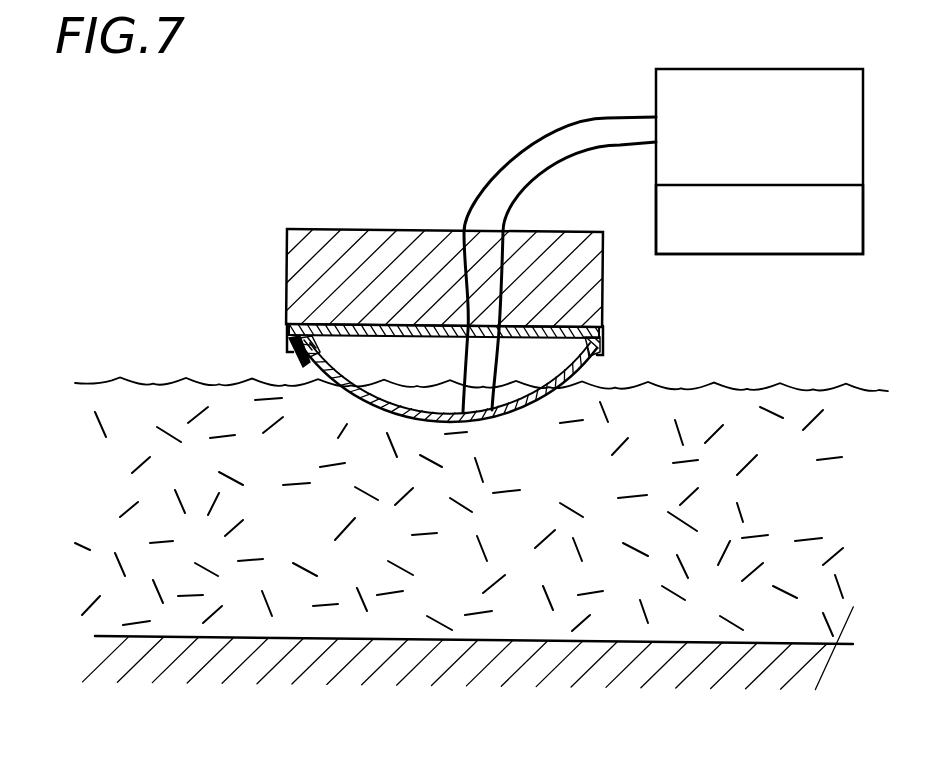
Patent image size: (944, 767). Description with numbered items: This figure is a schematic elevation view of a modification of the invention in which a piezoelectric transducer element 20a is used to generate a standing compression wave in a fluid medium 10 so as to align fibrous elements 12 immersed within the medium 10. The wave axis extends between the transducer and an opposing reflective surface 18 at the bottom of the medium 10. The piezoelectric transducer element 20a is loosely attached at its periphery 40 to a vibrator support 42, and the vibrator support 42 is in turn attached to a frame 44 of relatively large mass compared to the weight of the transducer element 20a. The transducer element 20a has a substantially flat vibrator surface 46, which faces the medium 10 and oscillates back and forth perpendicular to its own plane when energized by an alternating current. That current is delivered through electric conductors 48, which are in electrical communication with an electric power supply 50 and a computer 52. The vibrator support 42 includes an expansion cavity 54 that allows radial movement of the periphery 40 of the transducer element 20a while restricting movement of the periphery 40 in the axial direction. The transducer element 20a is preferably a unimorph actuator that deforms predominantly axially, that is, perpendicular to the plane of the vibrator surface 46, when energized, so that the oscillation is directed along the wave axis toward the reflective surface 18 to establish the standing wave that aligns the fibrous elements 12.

The fluid medium 10 is at (128, 405).
The fibrous elements 12 is at (80, 542).
The reflective surface 18 is at (416, 639).
The piezoelectric transducer element 20a is at (590, 378).
The periphery 40 is at (459, 348).
The vibrator support 42 is at (603, 347).
The frame 44 is at (305, 273).
The vibrator surface 46 is at (513, 425).
The electric conductors 48 is at (607, 143).
The electric power supply 50 is at (752, 68).
The computer 52 is at (777, 252).
The expansion cavity 54 is at (291, 337).